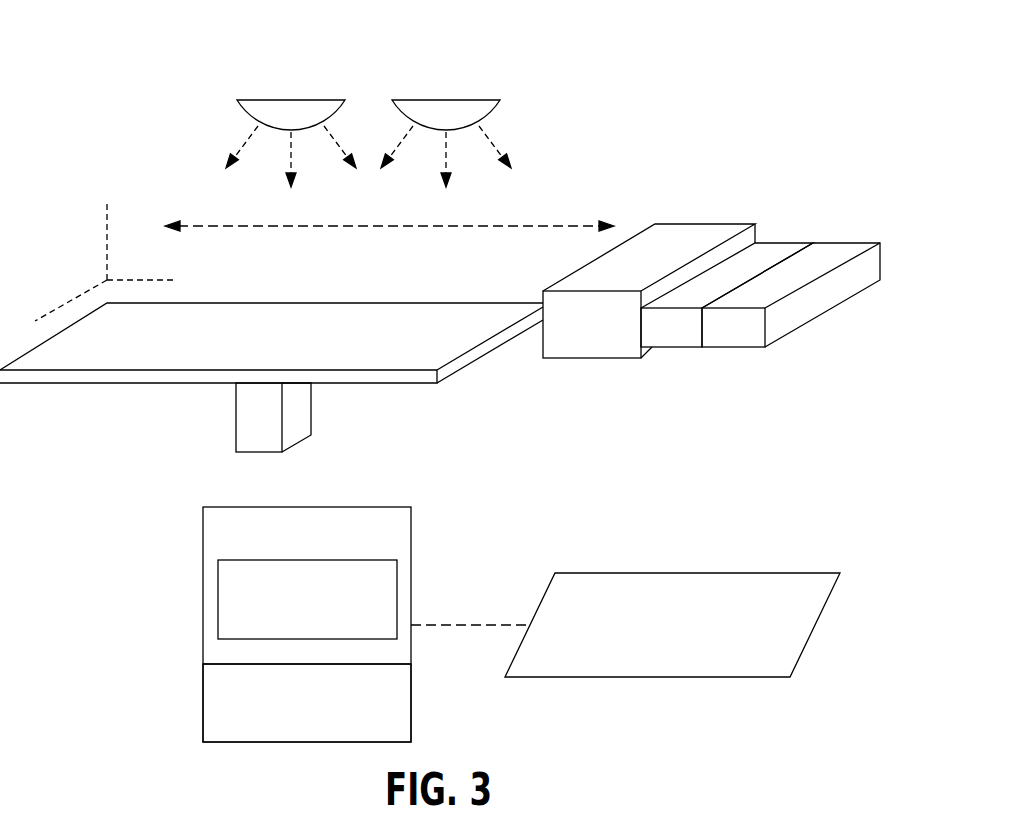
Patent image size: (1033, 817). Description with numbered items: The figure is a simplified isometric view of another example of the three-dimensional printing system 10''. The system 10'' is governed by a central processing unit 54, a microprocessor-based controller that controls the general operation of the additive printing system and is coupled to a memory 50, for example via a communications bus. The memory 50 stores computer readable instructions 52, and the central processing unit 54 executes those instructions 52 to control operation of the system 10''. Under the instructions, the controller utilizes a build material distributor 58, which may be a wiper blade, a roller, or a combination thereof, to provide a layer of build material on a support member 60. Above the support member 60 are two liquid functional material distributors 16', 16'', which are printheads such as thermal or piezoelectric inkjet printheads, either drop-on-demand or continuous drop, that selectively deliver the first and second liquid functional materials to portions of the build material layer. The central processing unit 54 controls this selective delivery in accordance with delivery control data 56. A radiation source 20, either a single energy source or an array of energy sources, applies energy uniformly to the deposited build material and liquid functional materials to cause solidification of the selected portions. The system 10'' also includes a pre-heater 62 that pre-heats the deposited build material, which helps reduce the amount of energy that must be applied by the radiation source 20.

The printing system 10'' is at (443, 226).
The radiation source 20 is at (290, 100).
The pre-heater 62 is at (446, 100).
The support member 60 is at (323, 303).
The build material distributor 58 is at (700, 224).
The liquid functional material distributor 16' is at (729, 251).
The liquid functional material distributor 16'' is at (794, 251).
The memory 50 is at (220, 533).
The computer readable instructions 52 is at (218, 600).
The central processing unit 54 is at (203, 702).
The delivery control data 56 is at (698, 573).